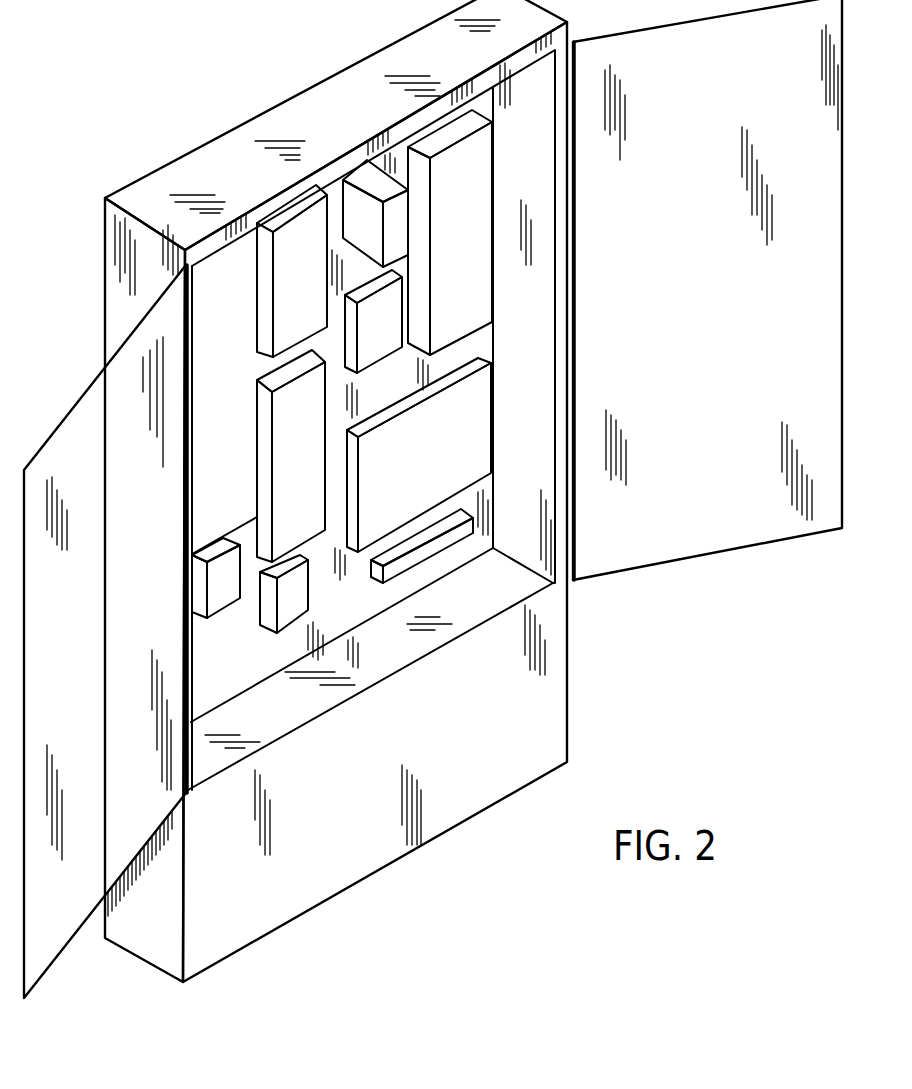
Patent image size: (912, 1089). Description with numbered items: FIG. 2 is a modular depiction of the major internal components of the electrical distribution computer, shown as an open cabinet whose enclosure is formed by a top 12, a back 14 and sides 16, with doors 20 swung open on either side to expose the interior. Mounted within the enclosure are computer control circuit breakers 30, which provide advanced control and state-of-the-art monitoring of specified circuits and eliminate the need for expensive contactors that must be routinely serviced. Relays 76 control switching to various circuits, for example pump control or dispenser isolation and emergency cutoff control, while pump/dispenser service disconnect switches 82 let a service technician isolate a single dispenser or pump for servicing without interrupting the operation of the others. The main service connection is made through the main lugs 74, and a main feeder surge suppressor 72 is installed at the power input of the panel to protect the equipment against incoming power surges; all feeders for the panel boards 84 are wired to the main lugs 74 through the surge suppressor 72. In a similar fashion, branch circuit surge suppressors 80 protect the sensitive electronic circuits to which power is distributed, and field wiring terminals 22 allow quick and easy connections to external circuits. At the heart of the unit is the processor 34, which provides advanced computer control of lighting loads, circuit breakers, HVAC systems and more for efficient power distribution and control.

The top 12 is at (225, 153).
The back 14 is at (293, 97).
The sides 16 is at (105, 222).
The doors 20 is at (93, 632).
The field wiring terminals 22 is at (423, 550).
The computer control circuit breakers 30 is at (209, 403).
The processor 34 is at (360, 198).
The main feeder surge suppressor 72 is at (225, 602).
The main lugs 74 is at (303, 613).
The relays 76 is at (447, 258).
The branch circuit surge suppressors 80 is at (408, 473).
The pump/dispenser service disconnect switches 82 is at (367, 338).
The panel boards 84 is at (282, 473).